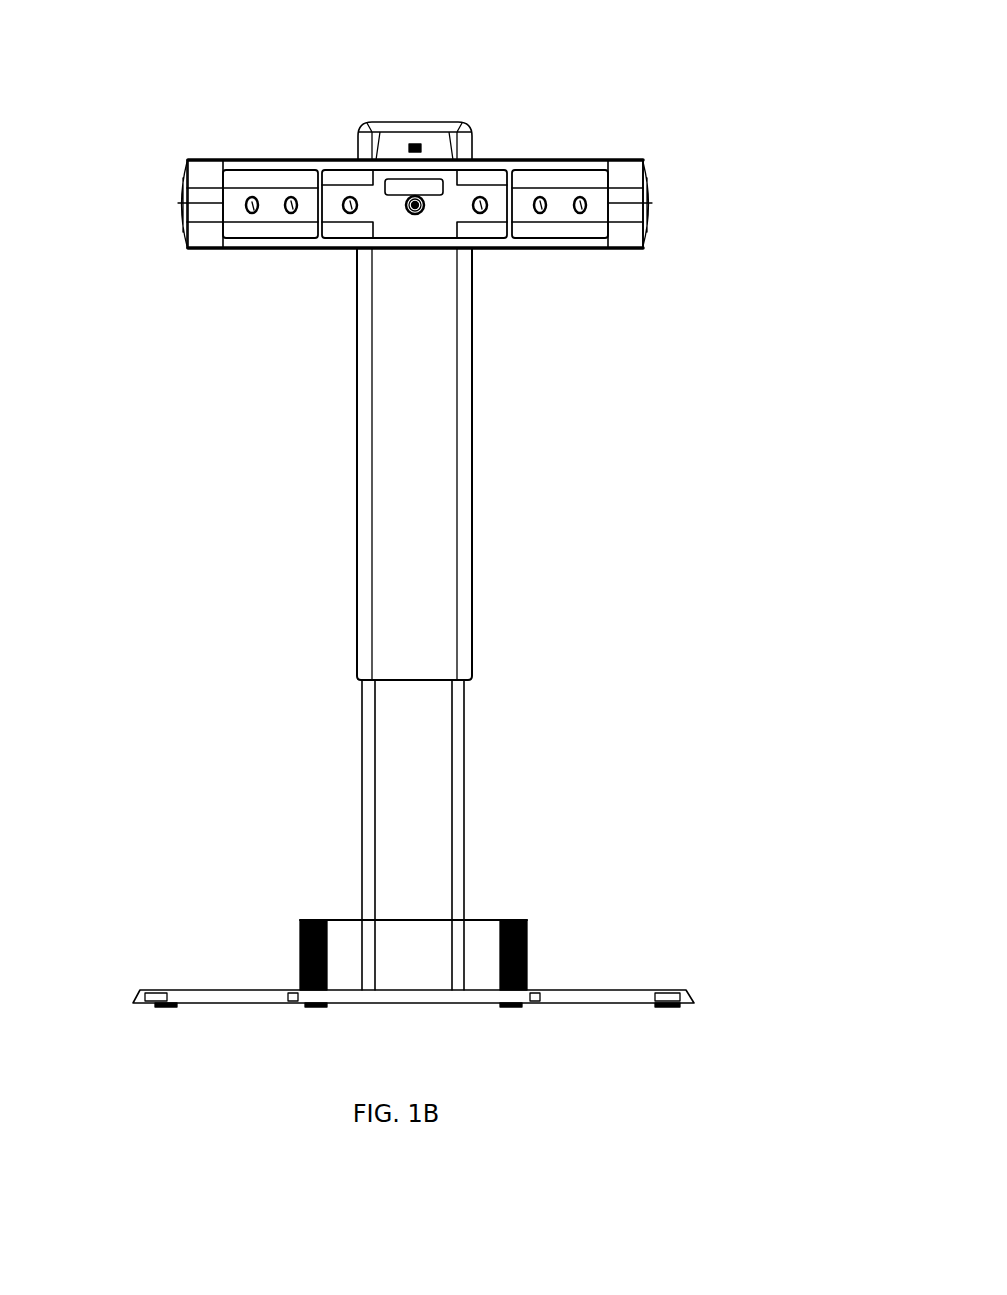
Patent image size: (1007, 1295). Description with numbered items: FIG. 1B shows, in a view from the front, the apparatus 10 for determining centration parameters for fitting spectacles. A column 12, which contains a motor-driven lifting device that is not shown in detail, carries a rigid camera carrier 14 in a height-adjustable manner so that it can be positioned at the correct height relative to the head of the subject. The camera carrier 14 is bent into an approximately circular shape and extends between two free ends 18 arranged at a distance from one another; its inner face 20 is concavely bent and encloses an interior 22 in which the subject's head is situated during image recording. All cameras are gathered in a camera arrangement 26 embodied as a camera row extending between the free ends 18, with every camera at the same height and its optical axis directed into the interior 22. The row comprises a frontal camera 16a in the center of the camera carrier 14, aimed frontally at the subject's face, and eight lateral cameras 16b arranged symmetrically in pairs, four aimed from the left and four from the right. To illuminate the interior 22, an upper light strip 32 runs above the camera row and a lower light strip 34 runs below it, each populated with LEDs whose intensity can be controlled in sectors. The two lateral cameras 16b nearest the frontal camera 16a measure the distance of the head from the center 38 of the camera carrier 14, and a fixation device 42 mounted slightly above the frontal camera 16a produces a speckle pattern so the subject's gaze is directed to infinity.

The apparatus 10 is at (449, 503).
The column 12 is at (462, 647).
The camera carrier 14 is at (408, 224).
The frontal camera 16a is at (425, 203).
The lateral cameras 16b is at (350, 197).
The free ends 18 is at (190, 250).
The inner face 20 is at (388, 213).
The interior 22 is at (515, 290).
The camera arrangement 26 is at (243, 270).
The upper light strip 32 is at (230, 158).
The lower light strip 34 is at (270, 248).
The center 38 is at (412, 212).
The fixation device 42 is at (404, 180).